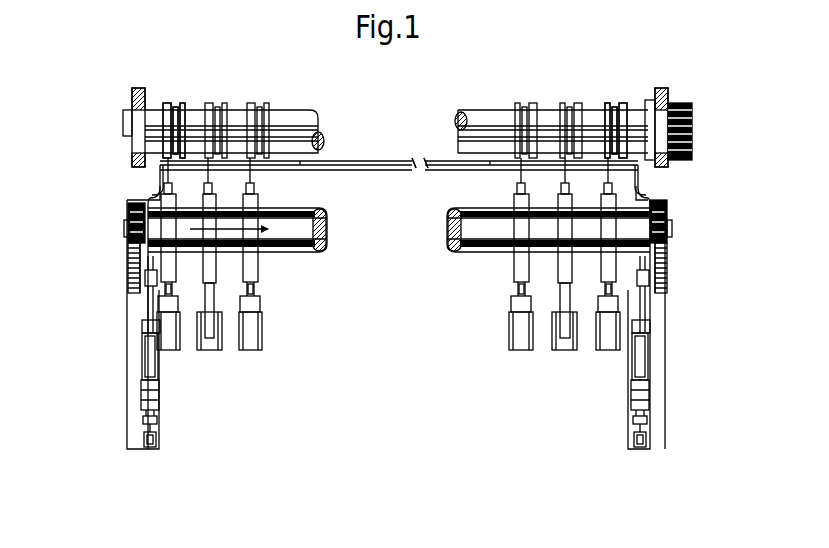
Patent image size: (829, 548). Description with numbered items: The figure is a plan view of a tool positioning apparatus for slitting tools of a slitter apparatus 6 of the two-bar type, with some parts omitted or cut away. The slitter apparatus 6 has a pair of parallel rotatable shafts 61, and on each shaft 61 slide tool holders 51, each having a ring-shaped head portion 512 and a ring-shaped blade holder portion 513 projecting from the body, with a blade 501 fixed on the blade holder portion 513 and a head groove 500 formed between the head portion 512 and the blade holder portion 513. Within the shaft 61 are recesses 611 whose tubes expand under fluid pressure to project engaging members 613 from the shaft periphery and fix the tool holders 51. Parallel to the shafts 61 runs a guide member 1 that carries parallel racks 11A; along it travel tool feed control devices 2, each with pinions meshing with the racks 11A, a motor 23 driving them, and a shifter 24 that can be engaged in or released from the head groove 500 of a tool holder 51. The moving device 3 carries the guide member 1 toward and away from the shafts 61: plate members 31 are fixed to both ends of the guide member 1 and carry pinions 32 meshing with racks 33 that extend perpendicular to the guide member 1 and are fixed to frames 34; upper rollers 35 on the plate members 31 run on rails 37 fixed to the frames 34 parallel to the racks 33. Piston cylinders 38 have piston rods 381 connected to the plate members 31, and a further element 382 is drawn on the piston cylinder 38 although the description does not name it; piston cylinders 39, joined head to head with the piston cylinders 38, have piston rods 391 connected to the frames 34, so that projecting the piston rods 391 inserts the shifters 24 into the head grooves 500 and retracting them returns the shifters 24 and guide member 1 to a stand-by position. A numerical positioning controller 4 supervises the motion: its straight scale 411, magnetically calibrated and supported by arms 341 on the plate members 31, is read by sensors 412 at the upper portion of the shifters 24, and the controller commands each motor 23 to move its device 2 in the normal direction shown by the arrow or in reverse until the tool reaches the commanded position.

The guide member 1 is at (443, 252).
The racks 11A is at (450, 230).
The tool feed control devices 2 is at (606, 258).
The motor 23 is at (565, 352).
The shifters 24 is at (620, 188).
The moving device 3 is at (407, 331).
The plate members 31 is at (670, 237).
The pinions 32 is at (668, 222).
The racks 33 is at (657, 272).
The frames 34 is at (660, 430).
The arms 341 is at (145, 196).
The upper rollers 35 is at (665, 258).
The rails 37 is at (650, 288).
The piston cylinders 38 is at (646, 362).
The piston rods 381 is at (646, 345).
The rod end 382 is at (648, 404).
The piston cylinders 39 is at (634, 398).
The piston rods 391 is at (634, 438).
The numerical positioning controller 4 is at (652, 185).
The straight scale 411 is at (418, 166).
The sensors 412 is at (488, 165).
The head groove 500 is at (648, 98).
The blade 501 is at (628, 104).
The tool holder 51 is at (167, 99).
The head portion 512 is at (608, 102).
The blade holder portion 513 is at (623, 102).
The slitter apparatus 6 is at (130, 88).
The shafts 61 is at (476, 110).
The recesses 611 is at (432, 110).
The engaging members 613 is at (464, 128).